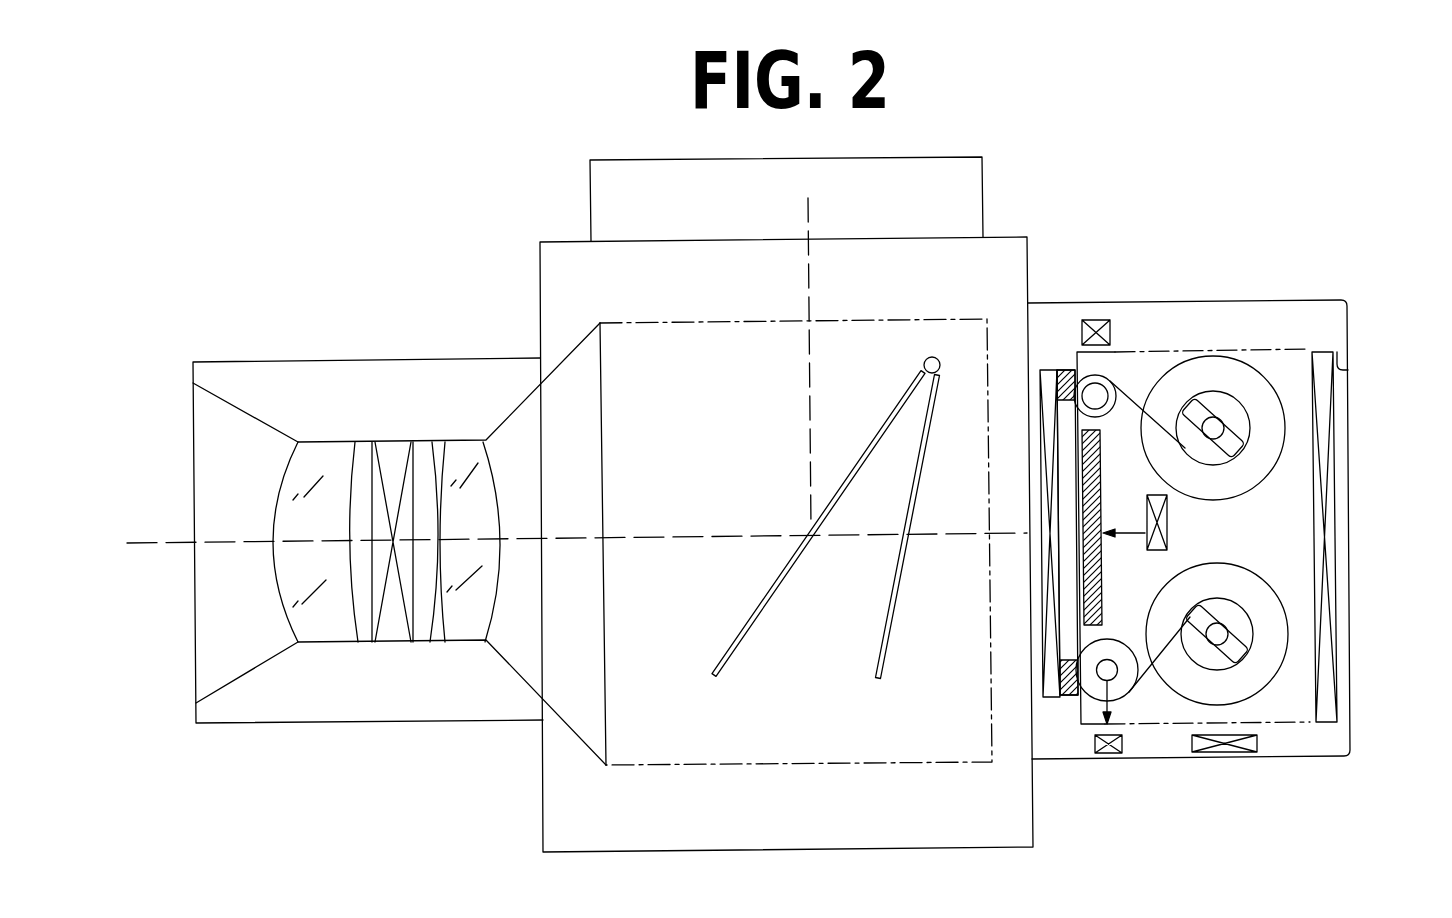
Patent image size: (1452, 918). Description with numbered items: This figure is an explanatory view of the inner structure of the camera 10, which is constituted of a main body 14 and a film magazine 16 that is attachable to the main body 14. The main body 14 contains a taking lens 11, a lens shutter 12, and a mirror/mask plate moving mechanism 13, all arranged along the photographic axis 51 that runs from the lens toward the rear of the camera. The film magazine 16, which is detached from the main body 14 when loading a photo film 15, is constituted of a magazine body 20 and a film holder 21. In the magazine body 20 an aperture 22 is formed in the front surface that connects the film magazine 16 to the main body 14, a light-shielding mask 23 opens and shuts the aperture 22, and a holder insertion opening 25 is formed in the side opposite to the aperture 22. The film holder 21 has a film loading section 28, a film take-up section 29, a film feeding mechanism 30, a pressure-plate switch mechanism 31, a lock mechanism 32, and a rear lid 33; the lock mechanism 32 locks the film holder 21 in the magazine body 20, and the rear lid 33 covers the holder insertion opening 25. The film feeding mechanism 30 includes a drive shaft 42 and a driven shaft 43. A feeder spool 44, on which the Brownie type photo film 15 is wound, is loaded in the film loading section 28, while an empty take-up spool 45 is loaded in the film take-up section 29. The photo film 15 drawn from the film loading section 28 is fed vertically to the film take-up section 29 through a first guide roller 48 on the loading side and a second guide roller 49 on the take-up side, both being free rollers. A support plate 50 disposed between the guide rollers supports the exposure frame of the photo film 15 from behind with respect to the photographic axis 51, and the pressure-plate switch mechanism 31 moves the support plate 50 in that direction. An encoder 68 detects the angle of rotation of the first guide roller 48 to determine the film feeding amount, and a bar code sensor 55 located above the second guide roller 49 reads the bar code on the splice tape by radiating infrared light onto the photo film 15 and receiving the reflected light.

The camera 10 is at (428, 290).
The taking lens 11 is at (318, 622).
The lens shutter 12 is at (390, 462).
The mirror/mask plate moving mechanism 13 is at (890, 322).
The main body 14 is at (1013, 236).
The photo film 15 is at (1163, 632).
The film magazine 16 is at (1212, 290).
The magazine body 20 is at (1325, 300).
The film holder 21 is at (1290, 348).
The aperture 22 is at (1062, 400).
The light-shielding mask 23 is at (1047, 365).
The holder insertion opening 25 is at (1348, 370).
The film loading section 28 is at (1290, 698).
The film take-up section 29 is at (1283, 380).
The film feeding mechanism 30 is at (1223, 755).
The pressure-plate switch mechanism 31 is at (1168, 533).
The lock mechanism 32 is at (1323, 438).
The rear lid 33 is at (1342, 545).
The drive shaft 42 is at (1237, 433).
The driven shaft 43 is at (1233, 641).
The feeder spool 44 is at (1281, 595).
The take-up spool 45 is at (1268, 470).
The first guide roller 48 is at (1122, 690).
The second guide roller 49 is at (1107, 384).
The support plate 50 is at (1102, 475).
The photographic axis 51 is at (683, 543).
The bar code sensor 55 is at (1100, 318).
The encoder 68 is at (1110, 757).